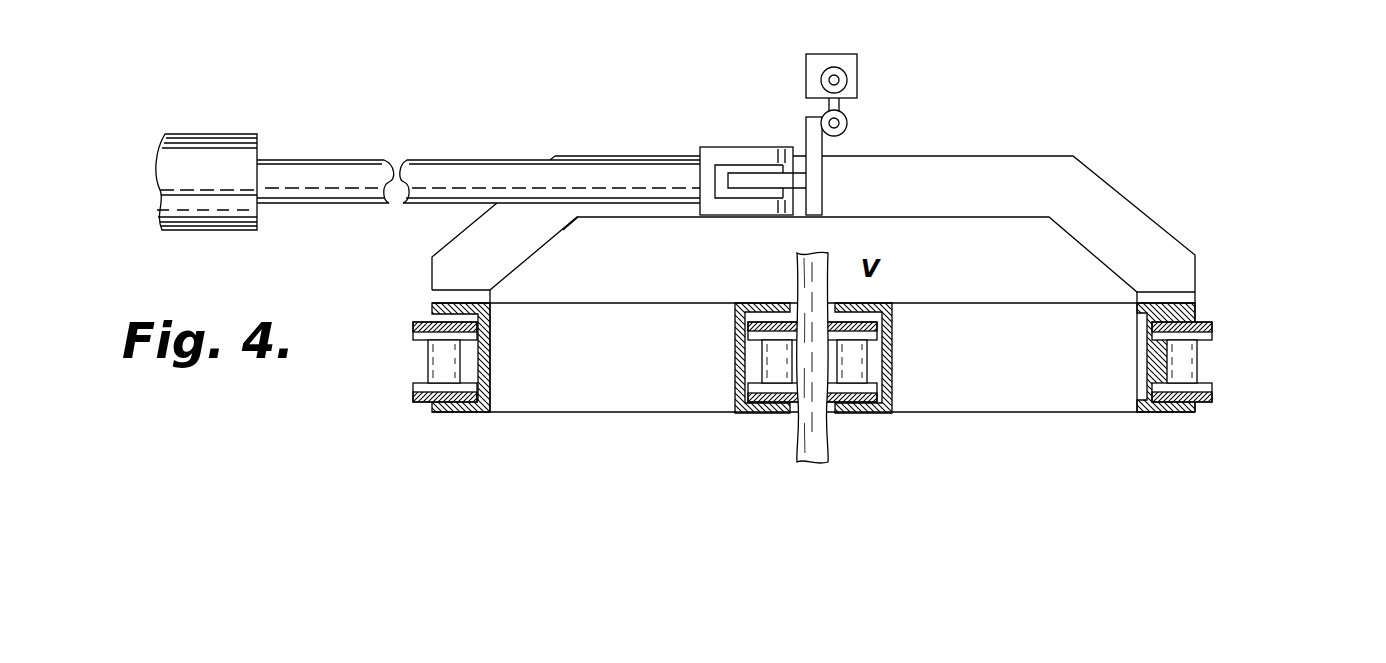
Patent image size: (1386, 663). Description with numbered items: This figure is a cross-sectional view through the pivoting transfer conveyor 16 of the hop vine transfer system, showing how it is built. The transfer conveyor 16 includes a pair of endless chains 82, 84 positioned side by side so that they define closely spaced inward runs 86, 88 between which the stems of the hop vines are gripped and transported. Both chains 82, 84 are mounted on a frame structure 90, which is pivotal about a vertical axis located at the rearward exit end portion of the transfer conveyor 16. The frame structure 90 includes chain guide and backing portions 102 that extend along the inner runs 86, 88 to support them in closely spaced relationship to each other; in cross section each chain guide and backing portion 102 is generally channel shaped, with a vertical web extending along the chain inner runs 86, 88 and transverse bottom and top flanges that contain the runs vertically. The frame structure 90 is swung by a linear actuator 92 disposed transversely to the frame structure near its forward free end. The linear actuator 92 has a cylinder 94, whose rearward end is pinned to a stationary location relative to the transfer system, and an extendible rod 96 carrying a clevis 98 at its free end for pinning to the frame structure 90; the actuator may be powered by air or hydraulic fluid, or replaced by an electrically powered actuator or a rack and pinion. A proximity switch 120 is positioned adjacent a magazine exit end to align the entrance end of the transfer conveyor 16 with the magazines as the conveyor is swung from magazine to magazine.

The transfer conveyor 16 is at (905, 248).
The endless chain 82 is at (422, 362).
The endless chain 84 is at (1203, 352).
The inward run 86 is at (763, 362).
The inward run 88 is at (867, 363).
The frame structure 90 is at (1058, 155).
The linear actuator 92 is at (428, 126).
The cylinder 94 is at (203, 150).
The extendible rod 96 is at (483, 167).
The clevis 98 is at (753, 155).
The chain guide and backing portion 102 is at (738, 338).
The proximity switch 120 is at (857, 74).